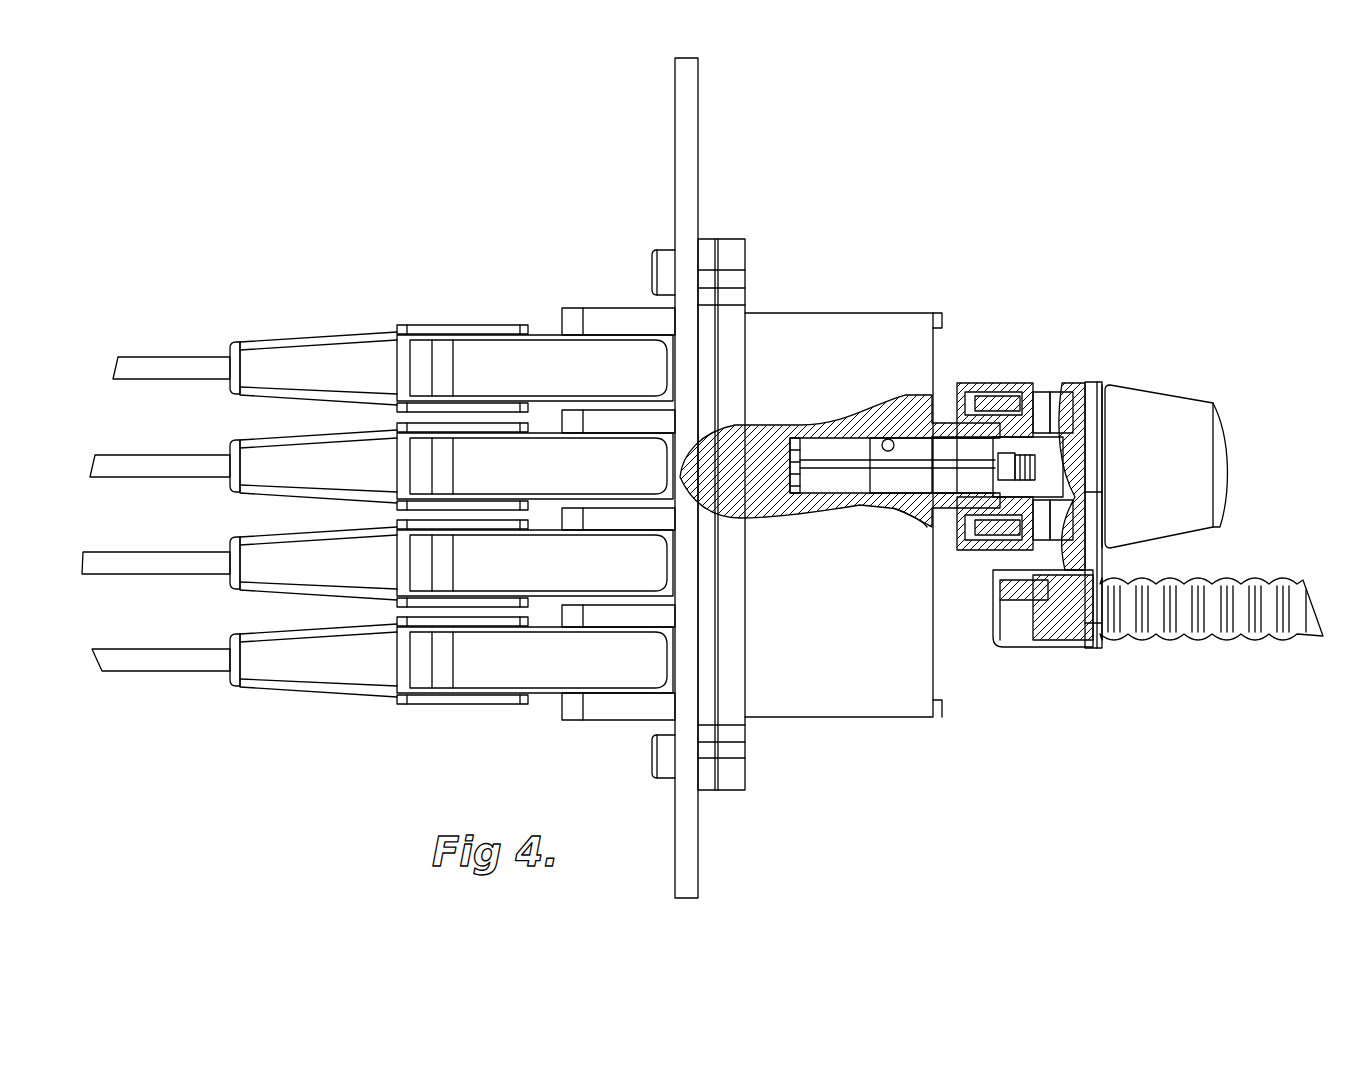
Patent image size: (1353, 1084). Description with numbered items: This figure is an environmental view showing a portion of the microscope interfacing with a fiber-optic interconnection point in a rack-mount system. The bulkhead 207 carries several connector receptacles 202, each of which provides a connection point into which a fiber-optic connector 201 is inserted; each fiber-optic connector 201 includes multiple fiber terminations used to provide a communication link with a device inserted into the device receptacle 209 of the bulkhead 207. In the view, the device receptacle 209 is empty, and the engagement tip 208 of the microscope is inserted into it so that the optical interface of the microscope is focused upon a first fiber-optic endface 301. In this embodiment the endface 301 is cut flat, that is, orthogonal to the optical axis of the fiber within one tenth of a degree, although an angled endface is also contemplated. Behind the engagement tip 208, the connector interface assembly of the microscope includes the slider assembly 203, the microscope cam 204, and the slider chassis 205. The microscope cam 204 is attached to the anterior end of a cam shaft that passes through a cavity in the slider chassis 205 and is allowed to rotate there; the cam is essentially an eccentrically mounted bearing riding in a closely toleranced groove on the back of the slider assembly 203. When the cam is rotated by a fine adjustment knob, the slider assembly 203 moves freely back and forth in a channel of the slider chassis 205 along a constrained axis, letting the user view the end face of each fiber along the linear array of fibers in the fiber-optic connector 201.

The fiber-optic connector 201 is at (262, 368).
The connector receptacle 202 is at (630, 336).
The slider assembly 203 is at (1003, 384).
The microscope cam 204 is at (1048, 633).
The slider chassis 205 is at (1100, 650).
The bulkhead 207 is at (690, 803).
The engagement tip 208 is at (945, 432).
The device receptacle 209 is at (885, 313).
The fiber-optic endface 301 is at (800, 425).